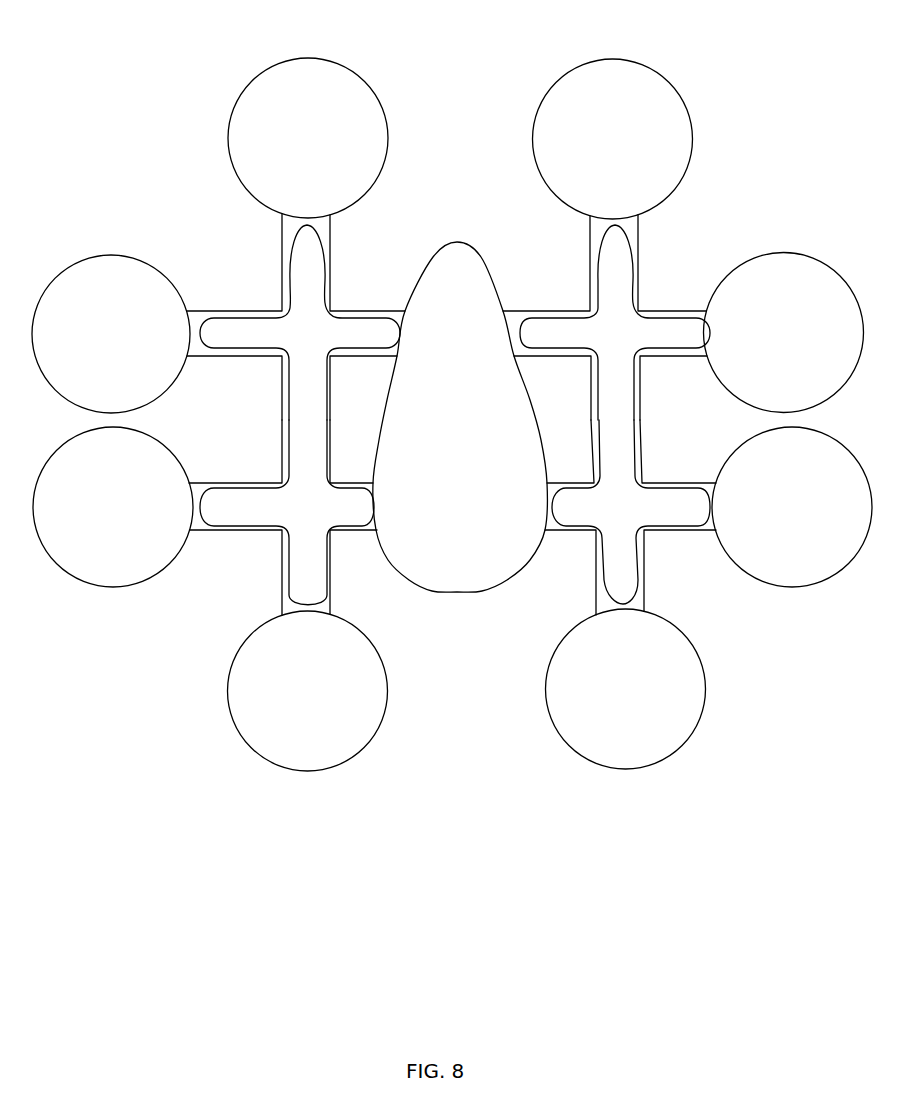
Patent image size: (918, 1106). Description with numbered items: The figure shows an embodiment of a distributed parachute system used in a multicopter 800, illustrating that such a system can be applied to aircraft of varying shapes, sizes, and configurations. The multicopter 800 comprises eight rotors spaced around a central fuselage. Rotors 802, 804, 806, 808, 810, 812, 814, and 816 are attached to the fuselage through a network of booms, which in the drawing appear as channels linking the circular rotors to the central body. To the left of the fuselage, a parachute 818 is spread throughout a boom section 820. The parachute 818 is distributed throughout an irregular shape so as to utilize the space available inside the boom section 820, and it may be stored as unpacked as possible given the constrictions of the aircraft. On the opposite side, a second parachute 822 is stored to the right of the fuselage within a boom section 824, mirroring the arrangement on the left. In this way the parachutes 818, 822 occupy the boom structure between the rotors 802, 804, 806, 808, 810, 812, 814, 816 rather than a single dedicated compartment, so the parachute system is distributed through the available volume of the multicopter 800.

The multicopter 800 is at (453, 242).
The rotor 802 is at (318, 78).
The rotor 804 is at (615, 73).
The rotor 806 is at (790, 258).
The rotor 808 is at (848, 465).
The rotor 810 is at (672, 637).
The rotor 812 is at (362, 648).
The rotor 814 is at (165, 455).
The rotor 816 is at (115, 266).
The parachute 818 is at (213, 316).
The boom section 820 is at (228, 482).
The parachute 822 is at (545, 316).
The boom section 824 is at (560, 482).